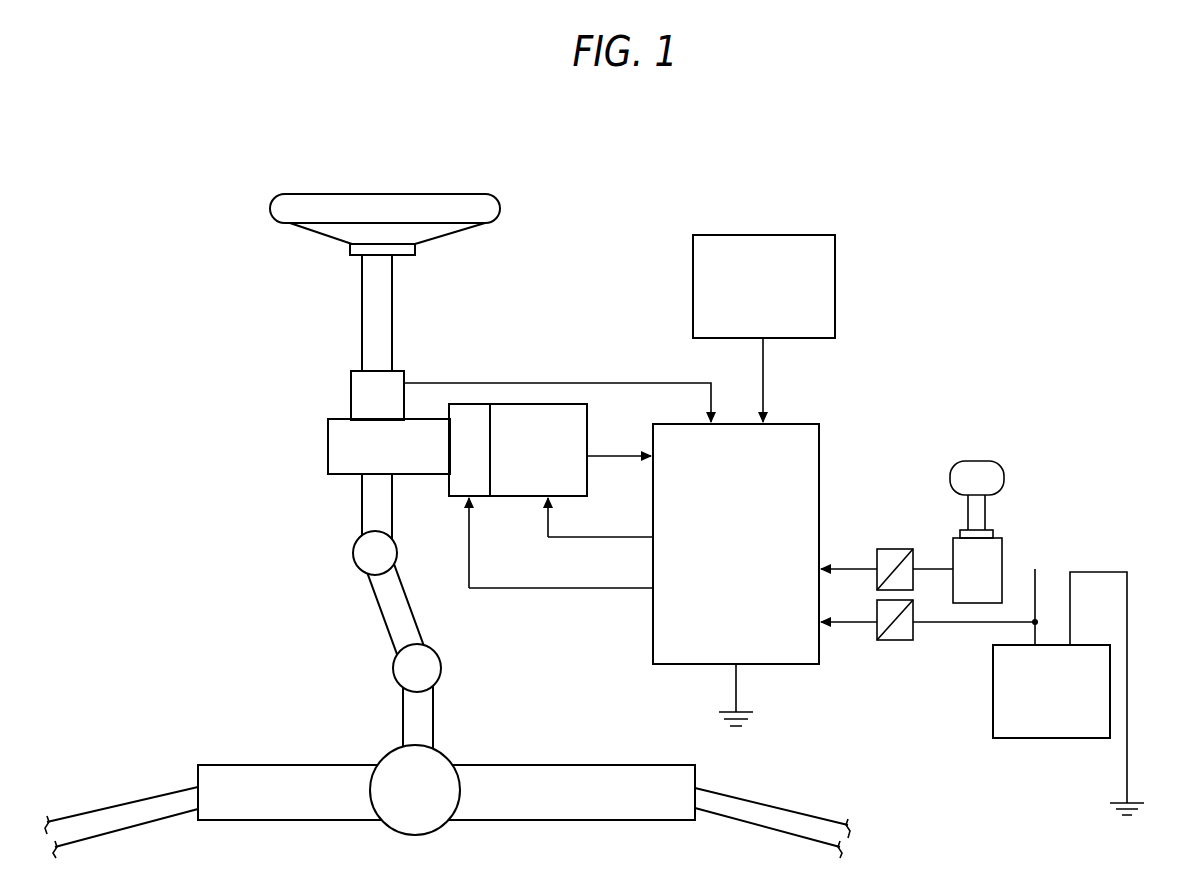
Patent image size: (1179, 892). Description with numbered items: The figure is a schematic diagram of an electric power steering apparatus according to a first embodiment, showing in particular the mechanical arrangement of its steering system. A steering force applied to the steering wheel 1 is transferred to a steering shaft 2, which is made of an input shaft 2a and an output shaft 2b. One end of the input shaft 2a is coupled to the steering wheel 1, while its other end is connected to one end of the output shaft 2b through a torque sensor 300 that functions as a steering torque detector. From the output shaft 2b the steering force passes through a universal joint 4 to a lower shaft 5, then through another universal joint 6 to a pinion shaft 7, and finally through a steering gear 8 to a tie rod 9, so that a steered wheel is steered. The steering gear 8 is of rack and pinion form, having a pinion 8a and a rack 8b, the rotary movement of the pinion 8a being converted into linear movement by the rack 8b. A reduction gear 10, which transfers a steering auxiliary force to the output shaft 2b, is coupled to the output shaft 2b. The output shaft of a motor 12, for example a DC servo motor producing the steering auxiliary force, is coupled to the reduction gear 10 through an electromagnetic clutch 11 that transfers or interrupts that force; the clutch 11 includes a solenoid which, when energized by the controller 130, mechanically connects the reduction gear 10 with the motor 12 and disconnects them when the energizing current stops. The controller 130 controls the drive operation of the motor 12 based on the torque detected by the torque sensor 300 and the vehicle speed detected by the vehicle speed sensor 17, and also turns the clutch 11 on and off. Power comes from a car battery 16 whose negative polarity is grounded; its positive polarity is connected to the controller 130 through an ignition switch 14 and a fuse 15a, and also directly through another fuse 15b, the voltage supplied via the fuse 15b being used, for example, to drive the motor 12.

The steering wheel 1 is at (512, 210).
The steering shaft 2 is at (333, 402).
The input shaft 2a is at (375, 326).
The output shaft 2b is at (377, 514).
The torque sensor 300 is at (367, 410).
The reduction gear 10 is at (347, 452).
The electromagnetic clutch apparatus 11 is at (458, 487).
The motor 12 is at (527, 454).
The universal joint 4 is at (372, 556).
The lower shaft 5 is at (393, 613).
The universal joint 6 is at (410, 668).
The pinion shaft 7 is at (407, 713).
The steering gear 8 is at (446, 777).
The pinion 8a is at (378, 765).
The rack 8b is at (605, 776).
The tie rod 9 is at (730, 810).
The vehicle speed sensor 17 is at (705, 312).
The controller 130 is at (816, 436).
The ignition switch 14 is at (972, 466).
The fuse 15a is at (893, 549).
The fuse 15b is at (896, 642).
The car battery 16 is at (1028, 728).